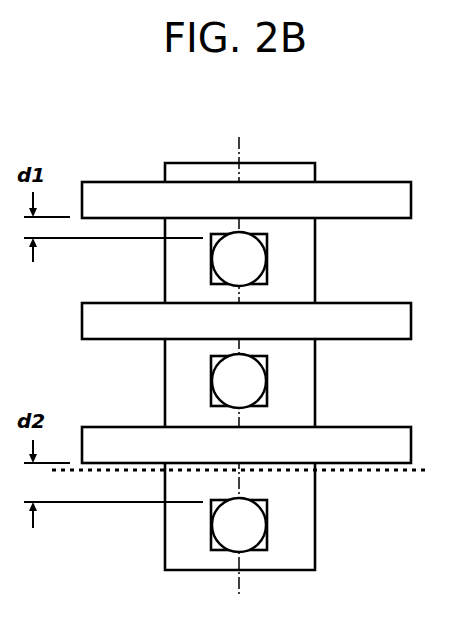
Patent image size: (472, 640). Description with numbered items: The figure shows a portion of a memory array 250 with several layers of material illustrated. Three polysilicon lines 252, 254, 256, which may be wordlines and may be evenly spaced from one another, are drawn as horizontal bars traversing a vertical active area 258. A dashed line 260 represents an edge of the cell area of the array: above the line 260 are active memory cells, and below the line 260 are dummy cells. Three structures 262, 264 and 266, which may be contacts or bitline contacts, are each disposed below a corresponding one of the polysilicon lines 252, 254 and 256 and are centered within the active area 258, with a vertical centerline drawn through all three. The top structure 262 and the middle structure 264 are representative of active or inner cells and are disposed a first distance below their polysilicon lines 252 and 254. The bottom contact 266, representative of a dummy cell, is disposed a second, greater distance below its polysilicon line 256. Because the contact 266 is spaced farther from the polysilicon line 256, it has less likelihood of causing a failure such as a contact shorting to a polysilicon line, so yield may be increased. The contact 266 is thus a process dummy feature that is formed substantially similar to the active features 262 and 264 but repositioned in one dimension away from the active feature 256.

The memory array 250 is at (128, 82).
The polysilicon line 252 is at (117, 182).
The polysilicon line 254 is at (117, 303).
The polysilicon line 256 is at (117, 427).
The active area 258 is at (220, 163).
The dashed line 260 is at (368, 473).
The contact 262 is at (267, 278).
The contact 264 is at (267, 397).
The contact 266 is at (267, 540).